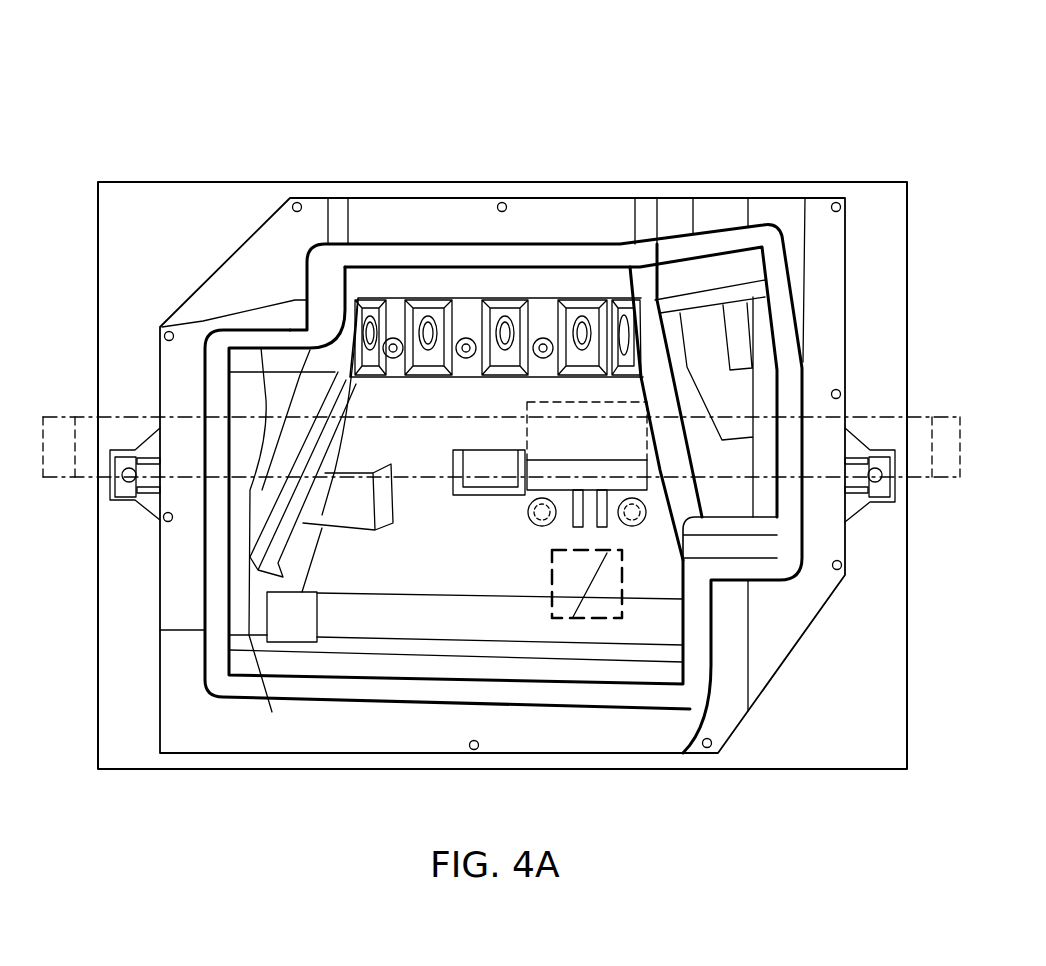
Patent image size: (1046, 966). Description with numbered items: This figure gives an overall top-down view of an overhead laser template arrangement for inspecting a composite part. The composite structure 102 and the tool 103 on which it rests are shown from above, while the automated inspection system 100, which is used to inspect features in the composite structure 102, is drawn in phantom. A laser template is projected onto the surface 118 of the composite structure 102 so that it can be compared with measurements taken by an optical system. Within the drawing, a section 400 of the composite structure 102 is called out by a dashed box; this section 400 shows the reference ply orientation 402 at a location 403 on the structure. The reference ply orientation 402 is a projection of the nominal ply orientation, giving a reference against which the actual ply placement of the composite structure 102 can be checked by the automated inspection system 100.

The automated inspection system 100 is at (265, 70).
The composite structure 102 is at (440, 563).
The tool 103 is at (392, 703).
The surface 118 is at (580, 610).
The section 400 is at (546, 583).
The reference ply orientation 402 is at (575, 575).
The location 403 is at (640, 585).